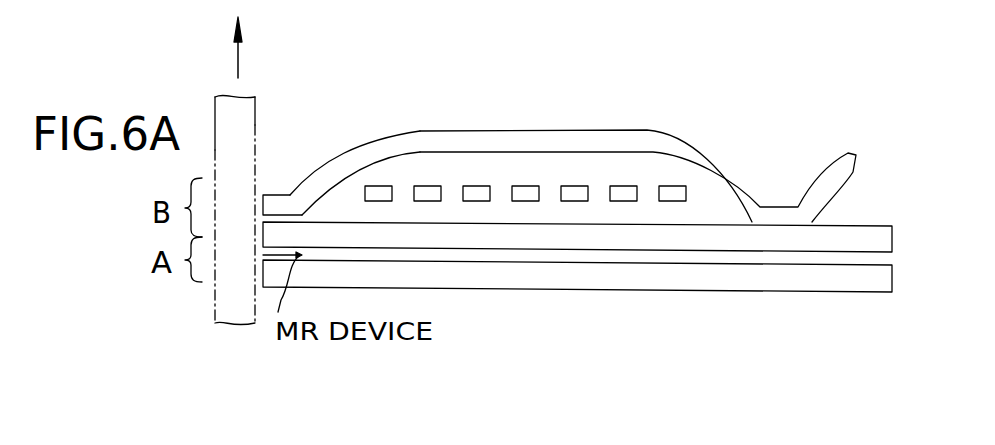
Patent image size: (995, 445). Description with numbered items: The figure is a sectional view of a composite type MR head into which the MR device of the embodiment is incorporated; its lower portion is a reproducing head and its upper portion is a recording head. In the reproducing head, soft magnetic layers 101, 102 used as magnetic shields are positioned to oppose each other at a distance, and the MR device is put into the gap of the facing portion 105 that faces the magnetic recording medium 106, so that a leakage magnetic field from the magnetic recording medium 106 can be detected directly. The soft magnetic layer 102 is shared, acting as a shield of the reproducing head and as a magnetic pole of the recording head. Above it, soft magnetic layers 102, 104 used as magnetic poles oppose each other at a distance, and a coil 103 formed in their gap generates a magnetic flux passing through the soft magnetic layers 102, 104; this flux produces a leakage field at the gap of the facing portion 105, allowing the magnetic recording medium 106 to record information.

The soft magnetic layer 101 is at (770, 277).
The soft magnetic layer 102 is at (557, 243).
The coil 103 is at (627, 201).
The soft magnetic layer 104 is at (572, 135).
The facing portion 105 is at (283, 185).
The magnetic recording medium 106 is at (232, 326).